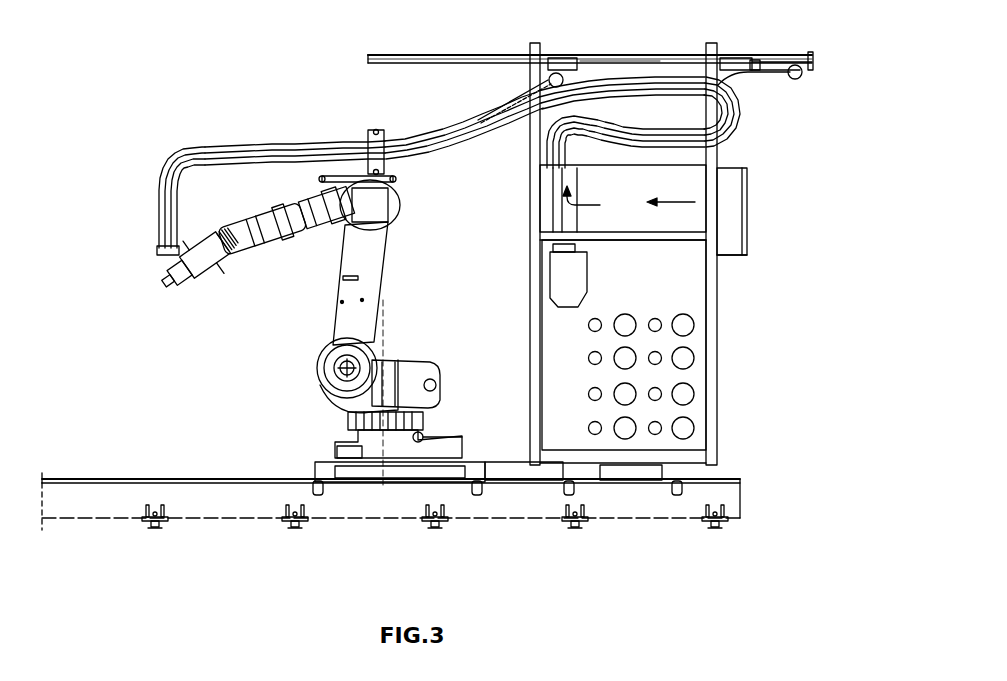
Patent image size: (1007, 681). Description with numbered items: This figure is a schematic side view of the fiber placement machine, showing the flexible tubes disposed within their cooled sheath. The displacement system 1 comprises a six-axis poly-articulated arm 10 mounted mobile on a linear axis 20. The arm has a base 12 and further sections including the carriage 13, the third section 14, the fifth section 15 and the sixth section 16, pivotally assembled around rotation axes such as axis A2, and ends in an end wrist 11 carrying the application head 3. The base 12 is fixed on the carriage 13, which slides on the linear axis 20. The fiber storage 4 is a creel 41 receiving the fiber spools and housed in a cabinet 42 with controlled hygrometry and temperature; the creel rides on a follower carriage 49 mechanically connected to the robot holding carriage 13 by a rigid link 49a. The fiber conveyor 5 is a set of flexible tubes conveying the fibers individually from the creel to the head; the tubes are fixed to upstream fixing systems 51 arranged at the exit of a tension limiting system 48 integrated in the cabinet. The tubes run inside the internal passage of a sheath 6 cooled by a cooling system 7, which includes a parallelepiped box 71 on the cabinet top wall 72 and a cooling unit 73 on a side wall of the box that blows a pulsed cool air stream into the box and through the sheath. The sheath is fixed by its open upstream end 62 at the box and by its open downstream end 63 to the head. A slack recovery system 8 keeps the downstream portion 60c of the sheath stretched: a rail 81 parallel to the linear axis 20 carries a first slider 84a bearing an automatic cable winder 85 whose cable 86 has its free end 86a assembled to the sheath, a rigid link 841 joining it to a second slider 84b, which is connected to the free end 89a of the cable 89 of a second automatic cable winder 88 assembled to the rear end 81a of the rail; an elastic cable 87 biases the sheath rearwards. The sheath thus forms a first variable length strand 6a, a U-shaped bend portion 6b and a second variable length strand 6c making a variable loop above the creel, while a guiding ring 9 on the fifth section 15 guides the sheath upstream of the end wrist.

The displacement system 1 is at (312, 338).
The application head 3 is at (164, 278).
The fiber storage 4 is at (727, 422).
The fiber conveyor 5 is at (203, 156).
The sheath 6 is at (244, 145).
The first variable length strand 6a is at (650, 122).
The bend portion 6b is at (742, 125).
The second variable length strand 6c is at (417, 132).
The cooling system 7 is at (757, 250).
The slack recovery system 8 is at (385, 45).
The guiding ring 9 is at (360, 128).
The poly-articulated arm 10 is at (330, 305).
The end wrist 11 is at (258, 236).
The base 12 is at (465, 430).
The carriage 13 is at (315, 466).
The third section 14 is at (378, 268).
The fifth section 15 is at (395, 222).
The sixth section 16 is at (313, 222).
The linear axis 20 is at (141, 472).
The creel 41 is at (683, 394).
The cabinet 42 is at (710, 333).
The tension limiting system 48 is at (553, 283).
The follower carriage 49 is at (640, 468).
The rigid link 49a is at (520, 465).
The upstream fixing system 51 is at (550, 247).
The downstream portion 60c is at (163, 162).
The upstream end 62 is at (545, 158).
The downstream end 63 is at (157, 243).
The box 71 is at (655, 228).
The top wall 72 is at (690, 164).
The cooling unit 73 is at (748, 214).
The rail 81 is at (425, 56).
The rear end 81a is at (813, 50).
The first slider 84a is at (568, 56).
The second slider 84b is at (727, 58).
The rigid link 841 is at (620, 58).
The automatic cable winder 85 is at (556, 73).
The cable 86 is at (525, 97).
The free end 86a is at (505, 110).
The elastic cable 87 is at (745, 80).
The second automatic cable winder 88 is at (800, 62).
The cable 89 is at (775, 66).
The free end 89a is at (755, 58).
The rotation axis A2 is at (320, 380).